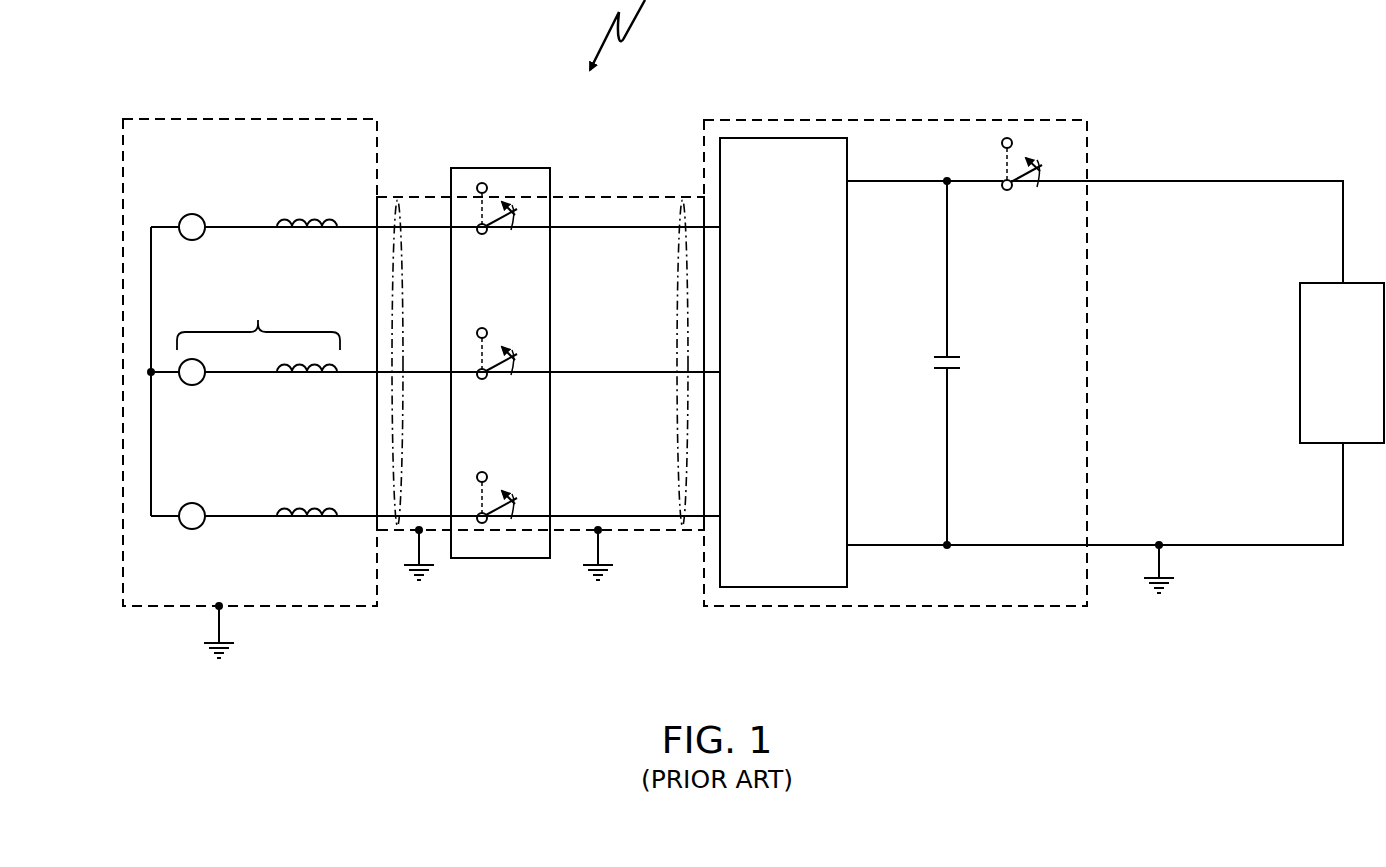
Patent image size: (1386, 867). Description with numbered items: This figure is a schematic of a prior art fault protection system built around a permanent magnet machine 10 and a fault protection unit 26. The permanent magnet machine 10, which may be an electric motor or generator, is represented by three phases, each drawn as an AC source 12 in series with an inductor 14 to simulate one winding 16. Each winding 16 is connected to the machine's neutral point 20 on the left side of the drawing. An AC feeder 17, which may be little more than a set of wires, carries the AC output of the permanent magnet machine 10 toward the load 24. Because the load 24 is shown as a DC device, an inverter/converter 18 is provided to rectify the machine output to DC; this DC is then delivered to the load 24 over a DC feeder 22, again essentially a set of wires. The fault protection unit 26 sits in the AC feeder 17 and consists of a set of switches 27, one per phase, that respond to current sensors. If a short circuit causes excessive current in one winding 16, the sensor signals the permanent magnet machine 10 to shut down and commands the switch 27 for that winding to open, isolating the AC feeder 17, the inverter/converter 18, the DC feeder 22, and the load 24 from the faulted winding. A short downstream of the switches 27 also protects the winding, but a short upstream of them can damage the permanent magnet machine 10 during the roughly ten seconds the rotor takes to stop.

The permanent magnet machine 10 is at (190, 118).
The AC source 12 is at (191, 530).
The inductor 14 is at (305, 508).
The winding 16 is at (258, 320).
The AC feeder 17 is at (648, 532).
The inverter/converter 18 is at (878, 608).
The neutral point 20 is at (150, 426).
The DC feeder 22 is at (1142, 179).
The load 24 is at (1298, 362).
The fault protection unit 26 is at (493, 558).
The switch 27 is at (498, 232).